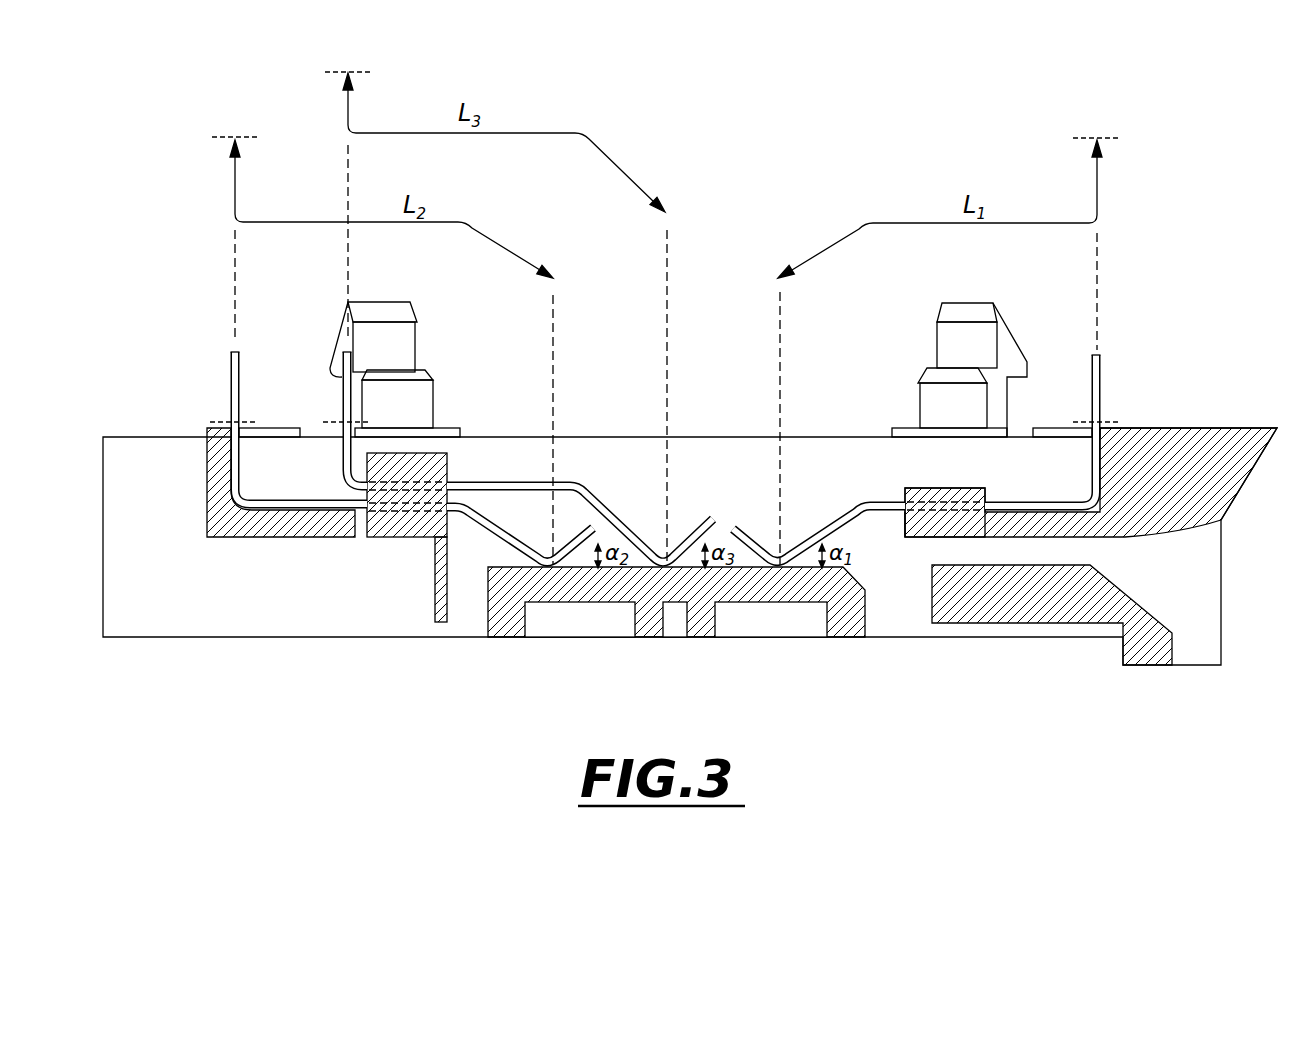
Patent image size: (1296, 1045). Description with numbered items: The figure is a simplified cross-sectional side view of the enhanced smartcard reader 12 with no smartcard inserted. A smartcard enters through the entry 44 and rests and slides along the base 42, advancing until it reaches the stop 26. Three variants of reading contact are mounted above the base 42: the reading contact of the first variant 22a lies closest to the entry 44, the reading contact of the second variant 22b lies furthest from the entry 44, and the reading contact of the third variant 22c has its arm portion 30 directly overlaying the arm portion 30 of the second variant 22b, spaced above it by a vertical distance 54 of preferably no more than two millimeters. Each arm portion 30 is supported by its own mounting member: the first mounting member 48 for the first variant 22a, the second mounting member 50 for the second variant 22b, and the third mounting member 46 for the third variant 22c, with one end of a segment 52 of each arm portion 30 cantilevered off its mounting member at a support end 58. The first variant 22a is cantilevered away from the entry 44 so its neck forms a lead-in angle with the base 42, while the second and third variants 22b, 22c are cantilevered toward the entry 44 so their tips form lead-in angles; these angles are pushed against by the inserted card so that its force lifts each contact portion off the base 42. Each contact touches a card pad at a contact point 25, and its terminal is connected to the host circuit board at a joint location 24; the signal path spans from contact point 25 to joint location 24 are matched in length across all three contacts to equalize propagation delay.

The enhanced smartcard reader 12 is at (1205, 213).
The reading contact of the first variant 22a is at (1100, 385).
The reading contact of the second variant 22b is at (231, 395).
The reading contact of the third variant 22c is at (340, 370).
The joint location 24 is at (348, 72).
The contact point 25 is at (668, 238).
The stop 26 is at (447, 570).
The arm portion 30 is at (540, 482).
The base 42 is at (510, 612).
The entry 44 is at (1170, 568).
The third mounting member 46 is at (445, 468).
The first mounting member 48 is at (960, 489).
The second mounting member 50 is at (262, 540).
The segment of the arm portion 52 is at (897, 492).
The vertical distance 54 is at (455, 497).
The support end 58 is at (905, 514).